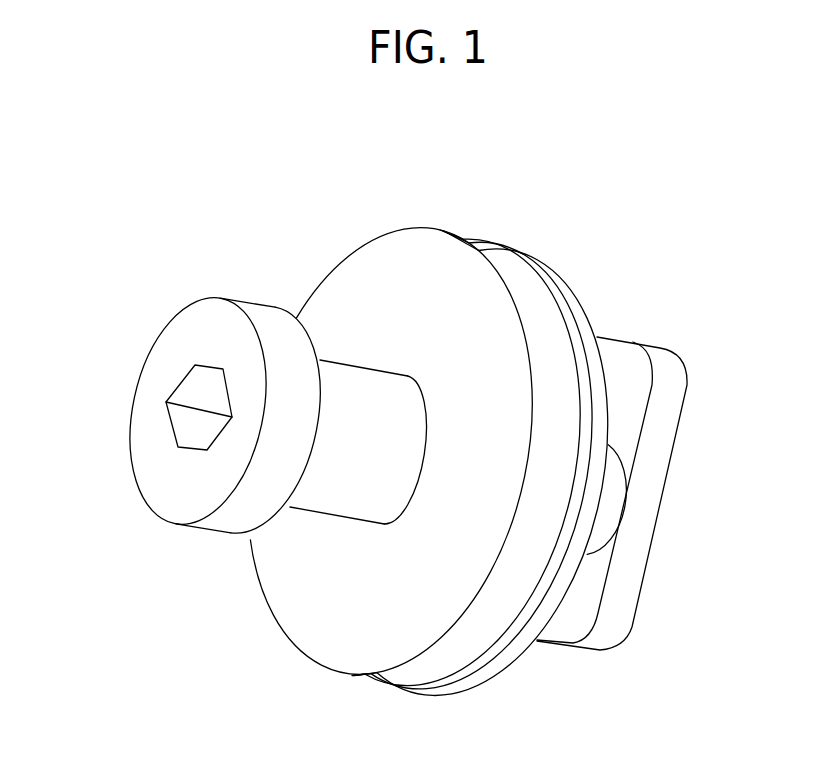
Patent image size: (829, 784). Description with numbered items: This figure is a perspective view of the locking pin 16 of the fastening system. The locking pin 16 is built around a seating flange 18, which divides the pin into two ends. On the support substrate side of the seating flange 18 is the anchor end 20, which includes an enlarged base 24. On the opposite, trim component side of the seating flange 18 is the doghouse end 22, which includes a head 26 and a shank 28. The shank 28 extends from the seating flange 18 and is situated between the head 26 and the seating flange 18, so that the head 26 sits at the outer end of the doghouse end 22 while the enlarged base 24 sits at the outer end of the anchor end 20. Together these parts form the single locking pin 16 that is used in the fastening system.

The locking pin 16 is at (595, 232).
The seating flange 18 is at (463, 648).
The anchor end 20 is at (665, 322).
The doghouse end 22 is at (224, 502).
The enlarged base 24 is at (622, 605).
The head 26 is at (153, 487).
The shank 28 is at (333, 487).